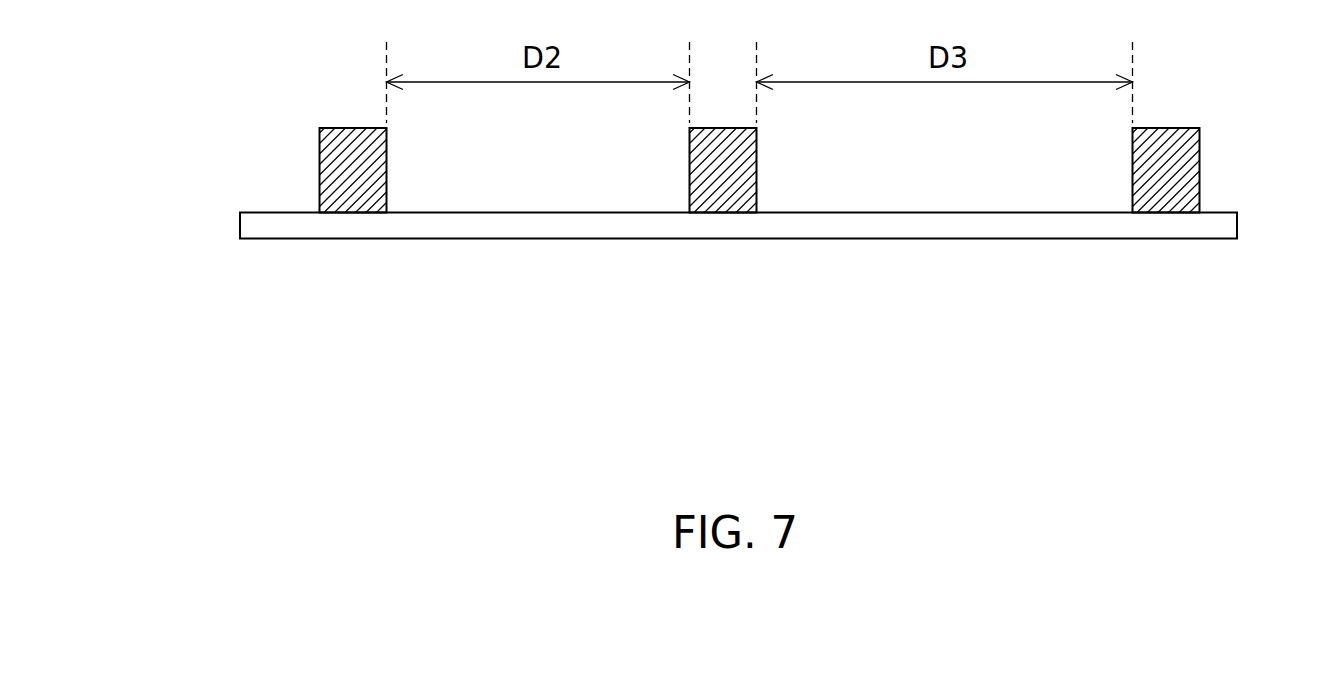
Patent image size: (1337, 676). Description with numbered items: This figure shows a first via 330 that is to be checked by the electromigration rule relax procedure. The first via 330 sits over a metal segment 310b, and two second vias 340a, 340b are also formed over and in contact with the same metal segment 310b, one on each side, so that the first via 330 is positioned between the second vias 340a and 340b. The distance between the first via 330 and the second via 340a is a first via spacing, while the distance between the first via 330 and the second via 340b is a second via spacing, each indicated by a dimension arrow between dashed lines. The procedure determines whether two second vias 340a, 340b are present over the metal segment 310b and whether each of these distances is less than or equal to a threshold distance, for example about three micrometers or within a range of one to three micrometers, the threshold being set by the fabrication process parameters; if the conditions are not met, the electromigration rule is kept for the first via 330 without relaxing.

The metal segment 310b is at (240, 222).
The second via 340a is at (320, 168).
The first via 330 is at (756, 168).
The second via 340b is at (1200, 168).